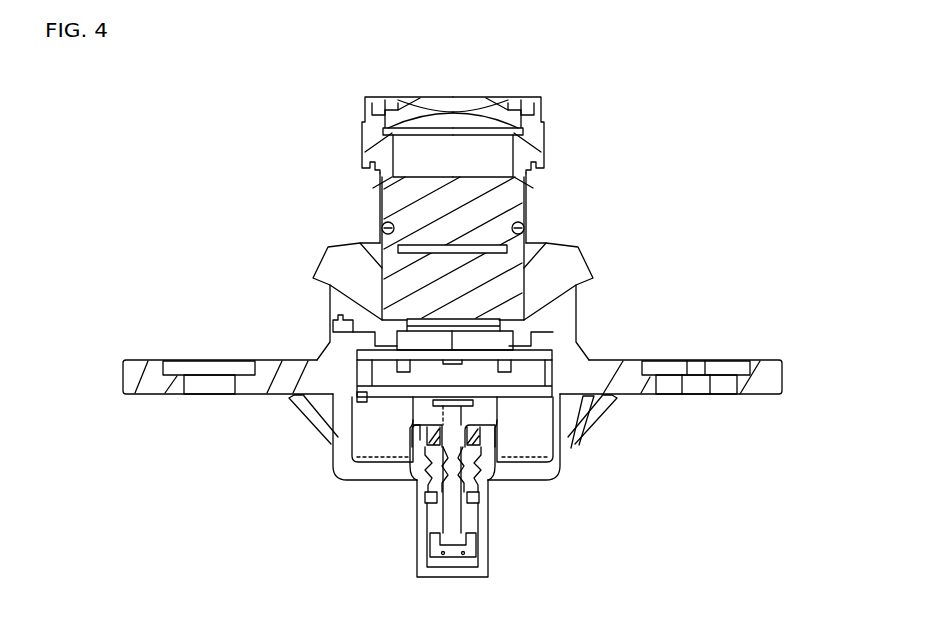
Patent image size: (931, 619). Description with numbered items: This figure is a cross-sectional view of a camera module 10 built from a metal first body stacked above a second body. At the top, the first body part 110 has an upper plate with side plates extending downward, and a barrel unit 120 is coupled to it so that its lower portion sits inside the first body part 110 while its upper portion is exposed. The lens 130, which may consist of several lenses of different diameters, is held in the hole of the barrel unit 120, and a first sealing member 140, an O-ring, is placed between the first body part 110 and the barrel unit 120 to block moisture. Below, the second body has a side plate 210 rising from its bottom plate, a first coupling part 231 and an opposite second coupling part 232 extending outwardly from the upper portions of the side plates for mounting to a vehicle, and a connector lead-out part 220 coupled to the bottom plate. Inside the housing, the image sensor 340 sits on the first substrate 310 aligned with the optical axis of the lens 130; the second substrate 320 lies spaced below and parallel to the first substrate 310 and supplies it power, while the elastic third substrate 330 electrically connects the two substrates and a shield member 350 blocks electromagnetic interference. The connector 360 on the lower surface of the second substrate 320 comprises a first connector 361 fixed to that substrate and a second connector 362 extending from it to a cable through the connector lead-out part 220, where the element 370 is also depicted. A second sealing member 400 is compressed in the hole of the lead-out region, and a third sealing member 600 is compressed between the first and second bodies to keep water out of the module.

The camera module 10 is at (184, 105).
The first body part 110 is at (555, 286).
The barrel unit 120 is at (533, 138).
The lens 130 is at (480, 150).
The first sealing member 140 is at (524, 228).
The side plate 210 is at (588, 357).
The connector lead-out part 220 is at (477, 497).
The first coupling part 231 is at (150, 373).
The second coupling part 232 is at (768, 373).
The first substrate 310 is at (362, 350).
The second substrate 320 is at (380, 398).
The third substrate 330 is at (330, 394).
The image sensor 340 is at (480, 340).
The shield member 350 is at (355, 366).
The connector 360 is at (565, 466).
The first connector 361 is at (456, 410).
The second connector 362 is at (482, 468).
The terminal holder 370 is at (427, 432).
The second sealing member 400 is at (430, 468).
The third sealing member 600 is at (347, 320).